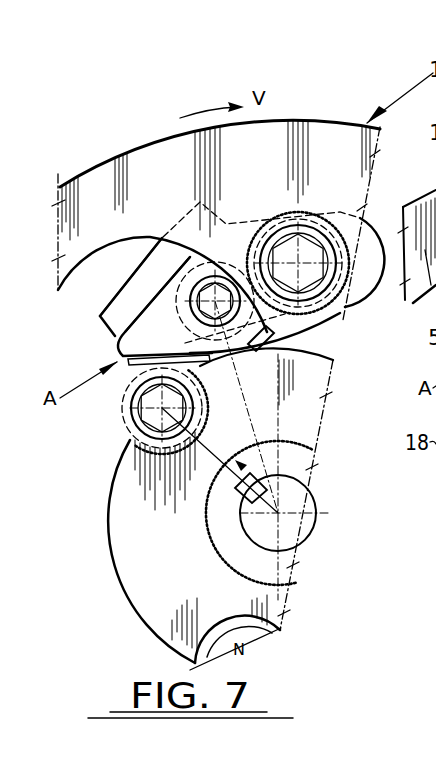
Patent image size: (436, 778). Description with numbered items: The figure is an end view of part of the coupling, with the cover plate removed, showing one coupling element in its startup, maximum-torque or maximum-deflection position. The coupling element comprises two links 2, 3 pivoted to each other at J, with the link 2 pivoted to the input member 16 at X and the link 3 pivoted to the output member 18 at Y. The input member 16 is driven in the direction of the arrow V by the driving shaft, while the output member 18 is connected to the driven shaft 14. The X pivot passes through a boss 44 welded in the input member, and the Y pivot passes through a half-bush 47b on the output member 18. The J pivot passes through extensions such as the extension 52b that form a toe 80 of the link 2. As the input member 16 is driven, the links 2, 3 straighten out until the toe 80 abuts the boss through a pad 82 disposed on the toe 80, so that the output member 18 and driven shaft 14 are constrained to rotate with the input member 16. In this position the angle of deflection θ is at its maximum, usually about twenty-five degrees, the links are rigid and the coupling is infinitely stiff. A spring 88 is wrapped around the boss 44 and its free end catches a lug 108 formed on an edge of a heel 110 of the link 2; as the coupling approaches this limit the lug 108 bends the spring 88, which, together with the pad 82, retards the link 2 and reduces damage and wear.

The link 2 is at (270, 320).
The link 3 is at (205, 370).
The driven shaft 14 is at (290, 533).
The input member 16 is at (329, 124).
The output member 18 is at (333, 360).
The boss 44 is at (330, 312).
The half-bush 47b is at (120, 425).
The extension 52b is at (135, 318).
The toe 80 is at (122, 346).
The pad 82 is at (145, 358).
The spring 88 is at (348, 228).
The lug 108 is at (350, 231).
The heel 110 is at (358, 258).